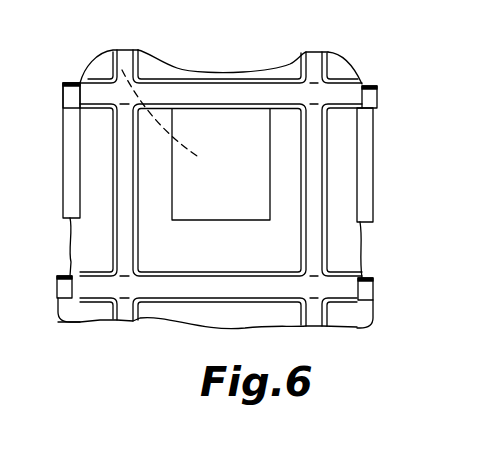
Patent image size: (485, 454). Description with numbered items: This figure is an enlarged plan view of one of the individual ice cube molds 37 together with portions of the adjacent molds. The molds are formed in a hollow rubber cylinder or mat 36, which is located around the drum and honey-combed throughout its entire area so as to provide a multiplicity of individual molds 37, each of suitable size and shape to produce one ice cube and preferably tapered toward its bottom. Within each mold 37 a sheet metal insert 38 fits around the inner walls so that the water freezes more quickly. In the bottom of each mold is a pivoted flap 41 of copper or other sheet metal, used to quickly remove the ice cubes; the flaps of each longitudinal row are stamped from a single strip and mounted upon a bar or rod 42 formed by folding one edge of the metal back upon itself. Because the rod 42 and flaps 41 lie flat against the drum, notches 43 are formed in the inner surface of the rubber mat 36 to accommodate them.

The hollow rubber cylinder or mat 36 is at (108, 325).
The individual ice cube mold 37 is at (189, 76).
The sheet metal insert 38 is at (97, 82).
The pivoted flap 41 is at (68, 210).
The bar or rod 42 is at (172, 120).
The notch 43 is at (147, 64).